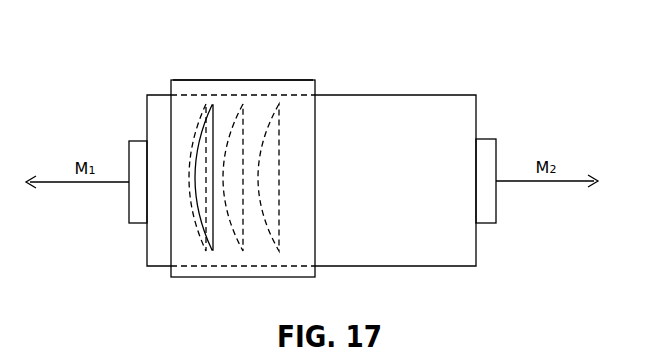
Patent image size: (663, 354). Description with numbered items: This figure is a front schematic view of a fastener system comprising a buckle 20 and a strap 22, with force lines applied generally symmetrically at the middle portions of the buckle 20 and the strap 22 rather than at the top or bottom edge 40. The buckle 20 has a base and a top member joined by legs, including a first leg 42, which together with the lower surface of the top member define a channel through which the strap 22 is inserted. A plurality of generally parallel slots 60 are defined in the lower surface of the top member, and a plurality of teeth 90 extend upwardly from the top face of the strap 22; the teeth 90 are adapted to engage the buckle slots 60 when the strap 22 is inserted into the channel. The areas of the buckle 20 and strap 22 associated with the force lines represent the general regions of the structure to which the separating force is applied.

The buckle 20 is at (217, 160).
The strap 22 is at (384, 80).
The bottom edge 40 is at (194, 279).
The first leg 42 is at (246, 80).
The slots 60 is at (193, 210).
The teeth 90 is at (272, 192).